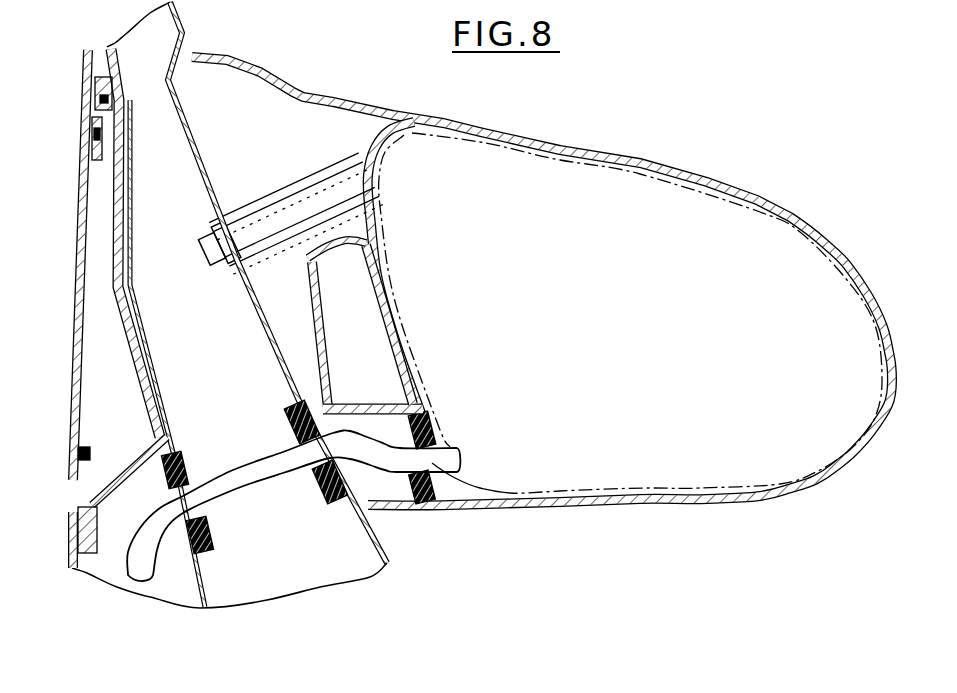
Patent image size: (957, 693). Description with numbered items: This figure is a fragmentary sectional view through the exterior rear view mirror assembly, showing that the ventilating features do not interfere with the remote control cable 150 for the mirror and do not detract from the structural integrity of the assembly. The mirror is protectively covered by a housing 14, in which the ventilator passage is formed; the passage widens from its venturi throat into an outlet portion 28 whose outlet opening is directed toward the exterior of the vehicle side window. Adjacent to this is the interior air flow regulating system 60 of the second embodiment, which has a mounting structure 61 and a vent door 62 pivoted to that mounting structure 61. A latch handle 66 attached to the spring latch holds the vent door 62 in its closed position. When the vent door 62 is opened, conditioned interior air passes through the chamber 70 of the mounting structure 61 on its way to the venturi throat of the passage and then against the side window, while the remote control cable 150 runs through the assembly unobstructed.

The housing 14 is at (635, 333).
The outlet portion 28 is at (370, 350).
The interior air flow regulating system 60 is at (73, 140).
The mounting structure 61 is at (70, 500).
The vent door 62 is at (84, 398).
The latch handle 66 is at (82, 173).
The chamber 70 is at (132, 446).
The remote control cable 150 is at (265, 477).